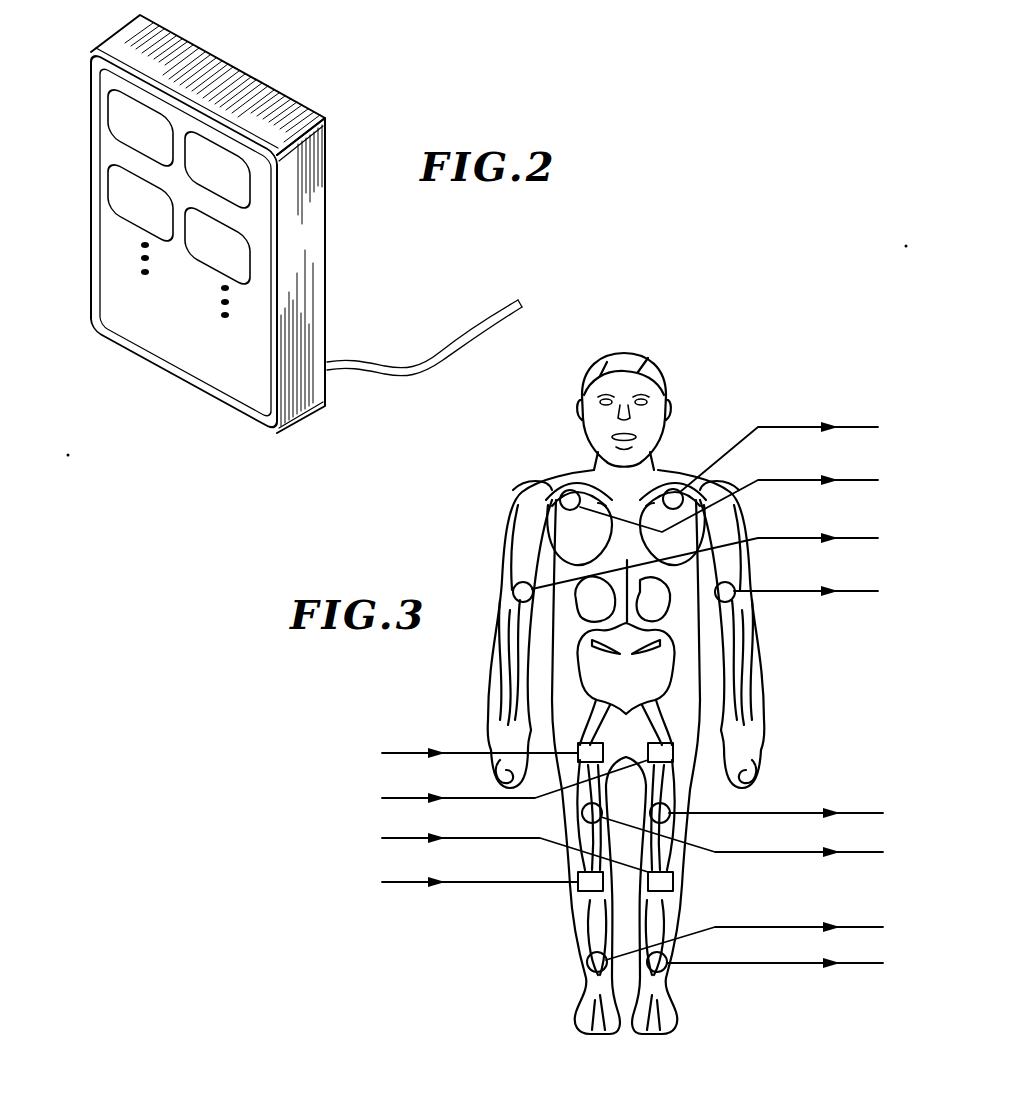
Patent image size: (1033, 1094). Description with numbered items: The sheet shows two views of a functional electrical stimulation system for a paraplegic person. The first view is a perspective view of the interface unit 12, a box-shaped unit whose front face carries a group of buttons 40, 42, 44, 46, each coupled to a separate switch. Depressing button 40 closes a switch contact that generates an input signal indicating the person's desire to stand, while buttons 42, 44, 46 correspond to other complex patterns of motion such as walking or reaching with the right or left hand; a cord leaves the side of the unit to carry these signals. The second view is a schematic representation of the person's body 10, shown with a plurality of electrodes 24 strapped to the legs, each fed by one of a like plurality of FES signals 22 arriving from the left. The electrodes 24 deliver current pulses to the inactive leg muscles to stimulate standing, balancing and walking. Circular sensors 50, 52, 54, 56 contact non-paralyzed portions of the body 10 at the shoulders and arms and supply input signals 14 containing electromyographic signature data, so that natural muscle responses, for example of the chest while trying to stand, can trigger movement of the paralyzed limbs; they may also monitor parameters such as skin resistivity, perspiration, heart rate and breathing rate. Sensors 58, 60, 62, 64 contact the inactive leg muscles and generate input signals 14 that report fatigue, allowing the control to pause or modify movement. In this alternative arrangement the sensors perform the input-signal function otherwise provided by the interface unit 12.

In FIG. 3, the person's body 10 is at (664, 347).
In FIG. 2, the interface unit 12 is at (280, 62).
In FIG. 3, the input signals 14 is at (843, 590).
In FIG. 3, the FES signals 22 is at (394, 881).
In FIG. 3, the electrodes 24 is at (578, 757).
In FIG. 2, the button 40 is at (112, 101).
In FIG. 2, the button 42 is at (240, 180).
In FIG. 2, the button 44 is at (113, 185).
In FIG. 2, the button 46 is at (243, 249).
In FIG. 3, the sensor 50 is at (675, 490).
In FIG. 3, the sensor 52 is at (735, 598).
In FIG. 3, the sensor 54 is at (514, 592).
In FIG. 3, the sensor 56 is at (564, 492).
In FIG. 3, the sensor 58 is at (669, 817).
In FIG. 3, the sensor 60 is at (583, 813).
In FIG. 3, the sensor 62 is at (590, 966).
In FIG. 3, the sensor 64 is at (667, 968).